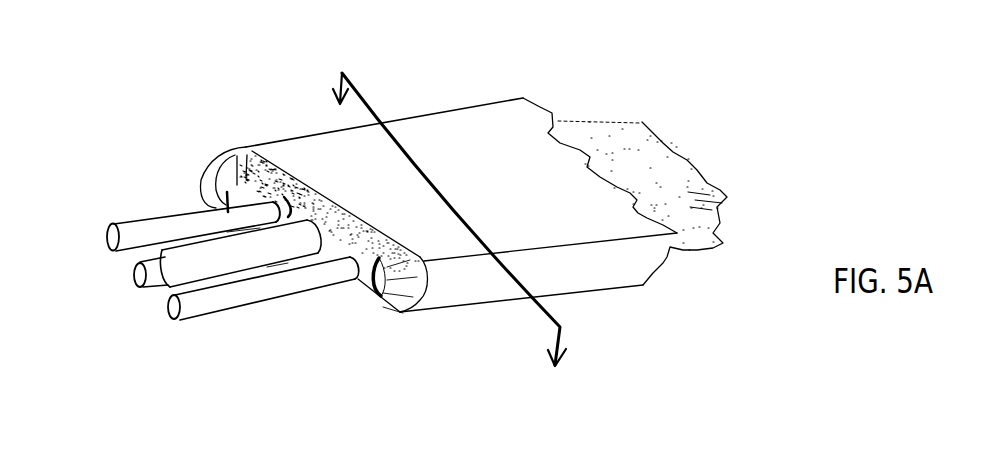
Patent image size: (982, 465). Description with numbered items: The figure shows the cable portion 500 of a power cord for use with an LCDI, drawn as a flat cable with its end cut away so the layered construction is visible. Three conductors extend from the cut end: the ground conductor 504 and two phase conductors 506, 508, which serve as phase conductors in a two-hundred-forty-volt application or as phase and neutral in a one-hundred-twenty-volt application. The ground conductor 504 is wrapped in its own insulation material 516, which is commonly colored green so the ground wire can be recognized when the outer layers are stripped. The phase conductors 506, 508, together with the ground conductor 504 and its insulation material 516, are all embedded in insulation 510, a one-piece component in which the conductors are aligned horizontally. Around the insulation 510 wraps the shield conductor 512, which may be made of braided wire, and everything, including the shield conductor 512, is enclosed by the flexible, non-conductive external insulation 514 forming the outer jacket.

The cable portion 500 is at (175, 66).
The ground conductor 504 is at (157, 278).
The phase conductor 506 is at (148, 214).
The phase conductor 508 is at (242, 302).
The insulation 510 is at (355, 285).
The shield conductor 512 is at (636, 152).
The external insulation 514 is at (437, 113).
The insulation material 516 is at (196, 276).